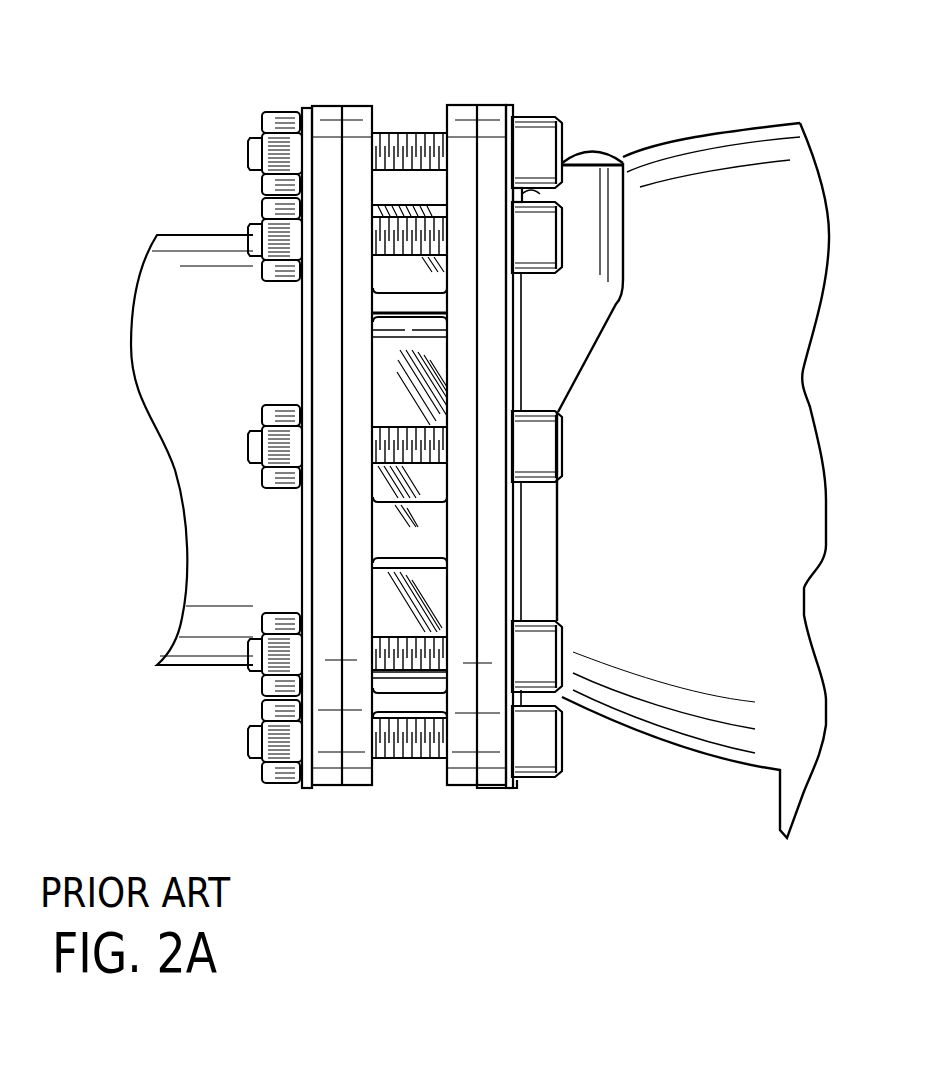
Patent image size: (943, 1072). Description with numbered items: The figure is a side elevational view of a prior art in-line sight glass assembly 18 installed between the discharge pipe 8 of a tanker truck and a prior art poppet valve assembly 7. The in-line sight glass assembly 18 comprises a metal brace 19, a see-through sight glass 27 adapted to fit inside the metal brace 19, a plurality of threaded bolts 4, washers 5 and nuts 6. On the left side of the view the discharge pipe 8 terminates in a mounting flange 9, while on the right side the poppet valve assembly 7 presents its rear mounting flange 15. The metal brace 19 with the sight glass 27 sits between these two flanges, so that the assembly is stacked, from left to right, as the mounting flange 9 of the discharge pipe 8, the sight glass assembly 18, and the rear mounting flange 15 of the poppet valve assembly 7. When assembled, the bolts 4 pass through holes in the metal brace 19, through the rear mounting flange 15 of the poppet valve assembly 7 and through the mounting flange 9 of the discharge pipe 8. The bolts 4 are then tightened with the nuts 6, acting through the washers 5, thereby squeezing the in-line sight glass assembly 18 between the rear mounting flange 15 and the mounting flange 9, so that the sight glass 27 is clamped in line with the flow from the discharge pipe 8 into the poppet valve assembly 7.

The threaded bolts 4 is at (563, 126).
The washers 5 is at (306, 108).
The nuts 6 is at (262, 120).
The prior art poppet valve assembly 7 is at (746, 466).
The discharge pipe 8 is at (208, 359).
The mounting flange 9 is at (326, 106).
The rear mounting flange 15 is at (503, 105).
The prior art in-line sight glass assembly 18 is at (414, 832).
The metal brace 19 is at (465, 98).
The see-through sight glass 27 is at (414, 204).